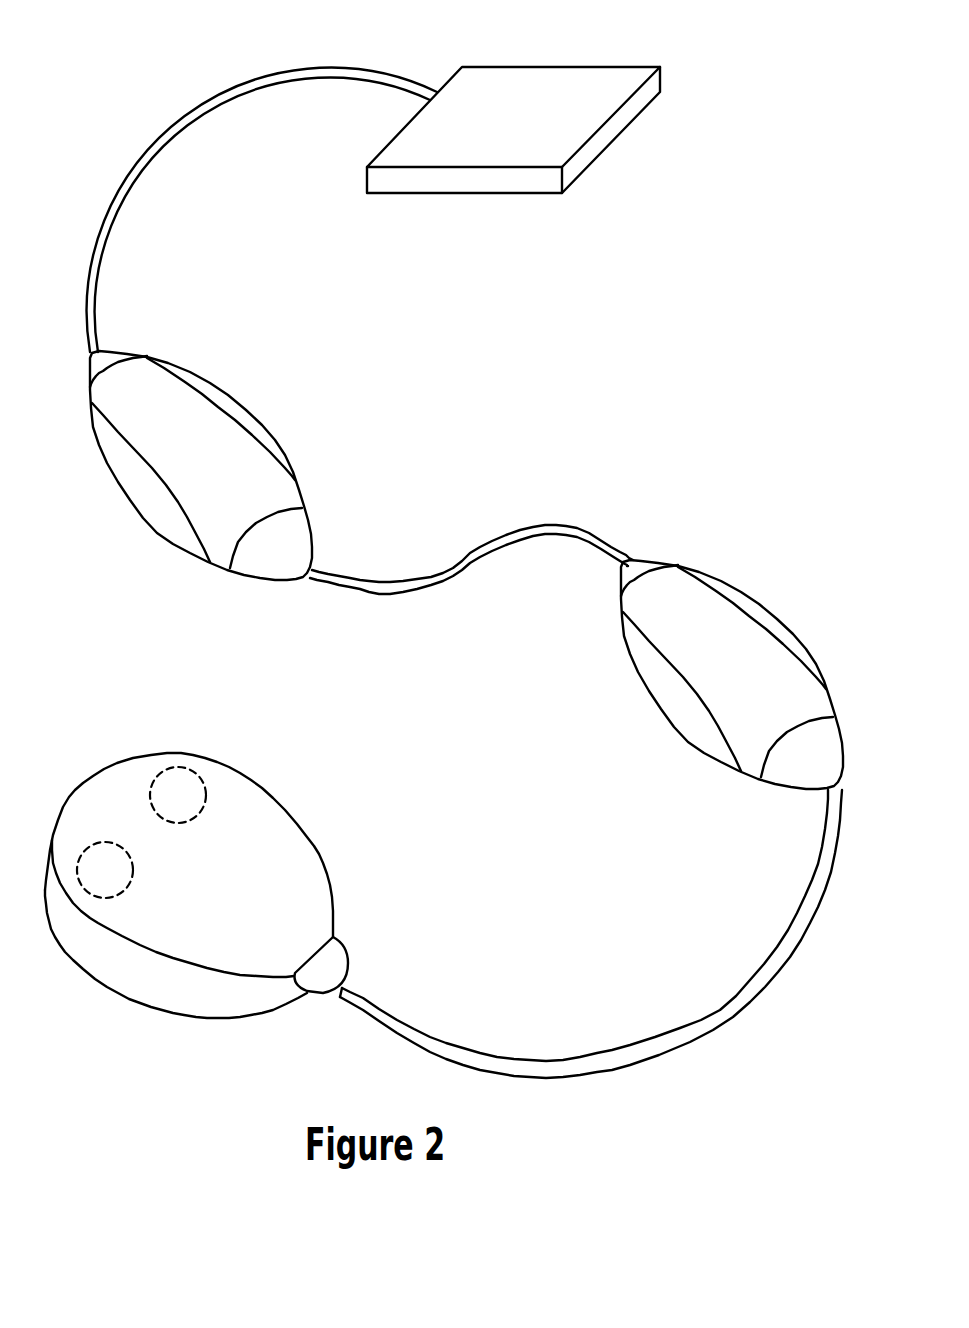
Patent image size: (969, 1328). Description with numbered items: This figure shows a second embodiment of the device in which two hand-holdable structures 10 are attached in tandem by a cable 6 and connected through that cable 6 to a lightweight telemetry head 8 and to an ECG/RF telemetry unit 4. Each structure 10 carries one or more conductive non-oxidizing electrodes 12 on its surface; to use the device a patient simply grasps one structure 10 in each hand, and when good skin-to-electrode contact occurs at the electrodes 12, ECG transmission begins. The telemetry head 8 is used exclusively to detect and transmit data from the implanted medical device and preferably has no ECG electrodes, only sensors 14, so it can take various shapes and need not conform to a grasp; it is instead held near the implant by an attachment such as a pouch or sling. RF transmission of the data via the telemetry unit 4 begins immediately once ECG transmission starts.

The telemetry 4 is at (637, 133).
The cable 6 is at (170, 115).
The telemetry head 8 is at (90, 987).
The structure 10 is at (313, 490).
The conductive non-oxidizing electrodes 12 is at (230, 452).
The sensors 14 is at (147, 782).